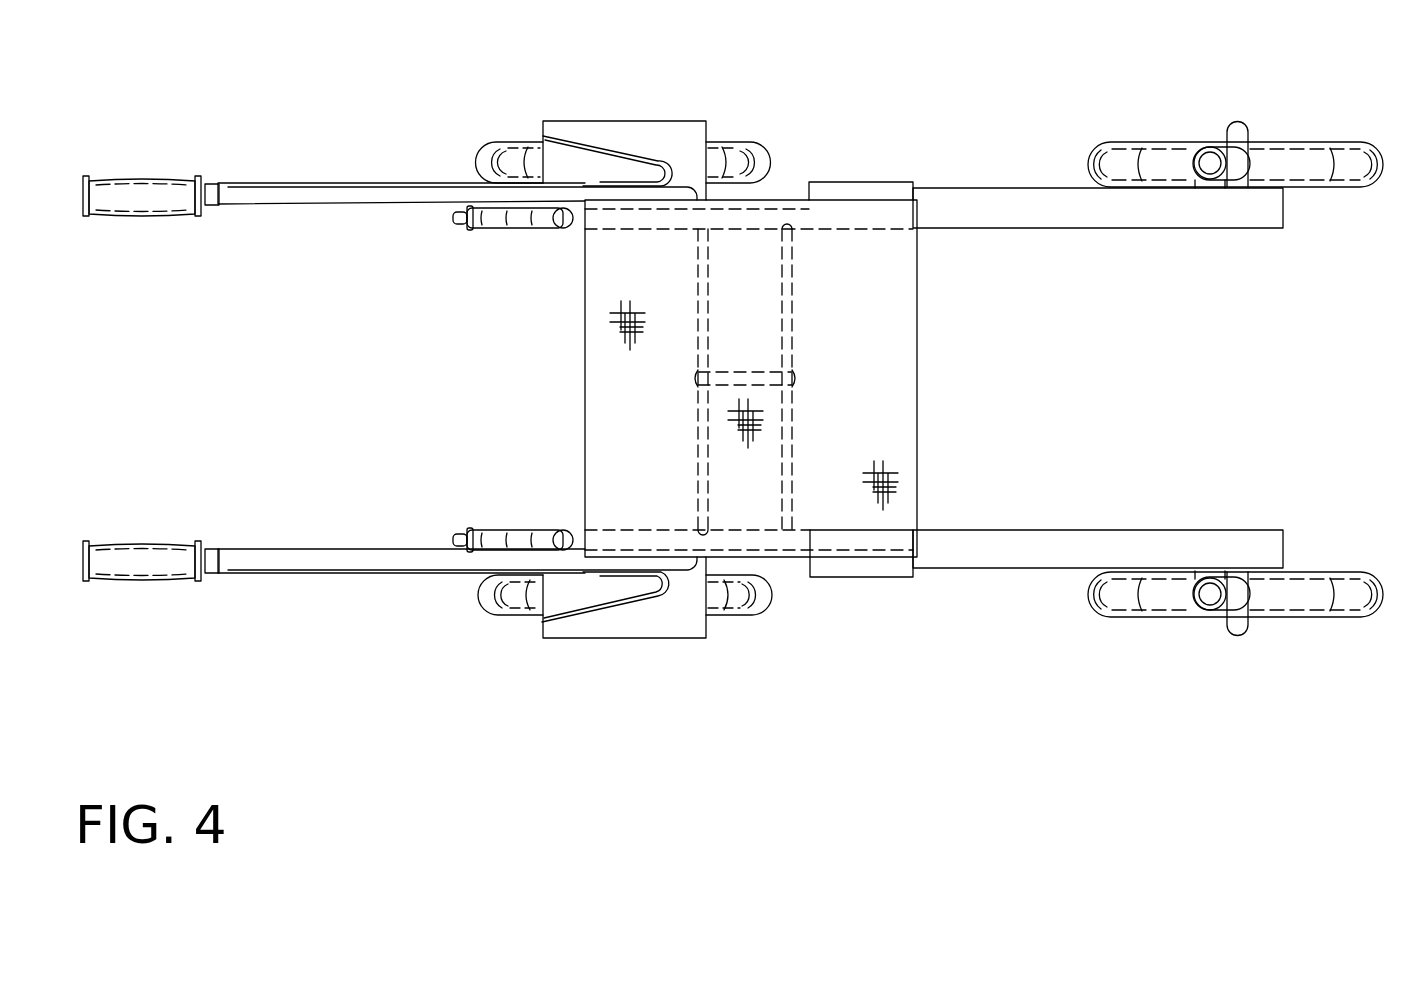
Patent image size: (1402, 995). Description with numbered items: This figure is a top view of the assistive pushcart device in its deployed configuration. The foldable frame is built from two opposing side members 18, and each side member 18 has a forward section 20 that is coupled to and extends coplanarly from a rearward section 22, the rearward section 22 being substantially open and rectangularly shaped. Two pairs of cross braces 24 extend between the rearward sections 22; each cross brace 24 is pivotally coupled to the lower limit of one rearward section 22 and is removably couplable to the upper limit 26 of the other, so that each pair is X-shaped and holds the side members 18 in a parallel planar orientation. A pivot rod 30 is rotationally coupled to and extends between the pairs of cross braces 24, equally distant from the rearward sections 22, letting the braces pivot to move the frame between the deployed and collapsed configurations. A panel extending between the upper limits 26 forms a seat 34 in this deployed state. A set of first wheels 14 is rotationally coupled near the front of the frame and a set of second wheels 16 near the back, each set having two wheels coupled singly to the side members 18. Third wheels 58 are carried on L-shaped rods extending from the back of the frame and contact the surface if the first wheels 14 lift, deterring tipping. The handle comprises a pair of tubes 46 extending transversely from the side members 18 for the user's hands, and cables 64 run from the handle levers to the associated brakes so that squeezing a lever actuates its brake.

The first wheels 14 is at (1322, 572).
The second wheels 16 is at (470, 163).
The opposing side members 18 is at (982, 227).
The forward section 20 is at (1015, 207).
The rearward section 22 is at (660, 537).
The cross braces 24 is at (786, 438).
The upper limit 26 is at (850, 547).
The pivot rod 30 is at (748, 378).
The seat 34 is at (863, 263).
The tubes 46 is at (262, 208).
The third wheels 58 is at (460, 222).
The cables 64 is at (637, 152).